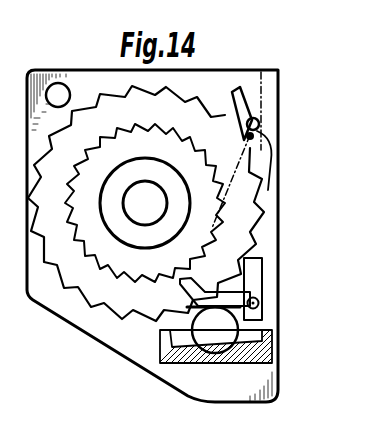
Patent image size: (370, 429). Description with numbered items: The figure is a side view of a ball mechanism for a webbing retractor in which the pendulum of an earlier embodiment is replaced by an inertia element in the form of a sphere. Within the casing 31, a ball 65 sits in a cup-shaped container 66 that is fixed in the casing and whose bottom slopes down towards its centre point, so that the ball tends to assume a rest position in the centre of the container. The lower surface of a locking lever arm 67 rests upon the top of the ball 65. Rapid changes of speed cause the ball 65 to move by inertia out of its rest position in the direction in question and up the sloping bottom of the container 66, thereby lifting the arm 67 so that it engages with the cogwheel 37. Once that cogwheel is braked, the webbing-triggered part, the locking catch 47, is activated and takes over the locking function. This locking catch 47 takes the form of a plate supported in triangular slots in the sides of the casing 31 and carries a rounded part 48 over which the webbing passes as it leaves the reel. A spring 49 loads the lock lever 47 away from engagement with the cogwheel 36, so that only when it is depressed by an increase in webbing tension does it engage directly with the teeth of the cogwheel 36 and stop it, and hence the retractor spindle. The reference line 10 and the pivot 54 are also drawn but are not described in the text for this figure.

The pivot axis line 10 is at (266, 68).
The casing 31 is at (97, 322).
The cogwheel 36 is at (122, 100).
The cogwheel 37 is at (212, 207).
The locking catch 47 is at (231, 100).
The rounded part 48 is at (260, 122).
The spring 49 is at (272, 155).
The bracket pivot 54 is at (260, 302).
The ball 65 is at (226, 331).
The cup-shaped container 66 is at (273, 362).
The locking lever arm 67 is at (246, 292).